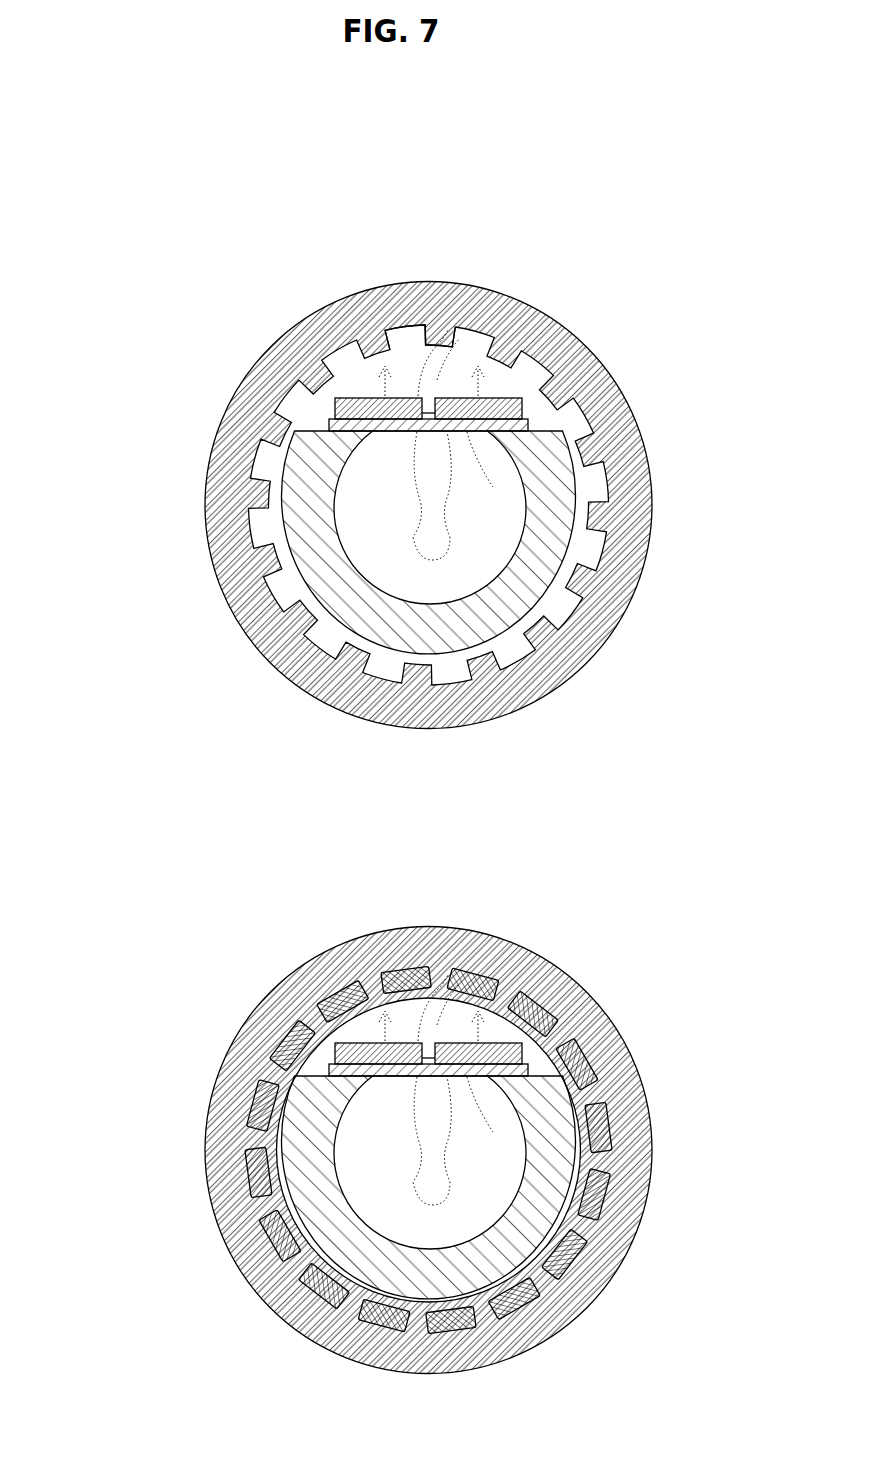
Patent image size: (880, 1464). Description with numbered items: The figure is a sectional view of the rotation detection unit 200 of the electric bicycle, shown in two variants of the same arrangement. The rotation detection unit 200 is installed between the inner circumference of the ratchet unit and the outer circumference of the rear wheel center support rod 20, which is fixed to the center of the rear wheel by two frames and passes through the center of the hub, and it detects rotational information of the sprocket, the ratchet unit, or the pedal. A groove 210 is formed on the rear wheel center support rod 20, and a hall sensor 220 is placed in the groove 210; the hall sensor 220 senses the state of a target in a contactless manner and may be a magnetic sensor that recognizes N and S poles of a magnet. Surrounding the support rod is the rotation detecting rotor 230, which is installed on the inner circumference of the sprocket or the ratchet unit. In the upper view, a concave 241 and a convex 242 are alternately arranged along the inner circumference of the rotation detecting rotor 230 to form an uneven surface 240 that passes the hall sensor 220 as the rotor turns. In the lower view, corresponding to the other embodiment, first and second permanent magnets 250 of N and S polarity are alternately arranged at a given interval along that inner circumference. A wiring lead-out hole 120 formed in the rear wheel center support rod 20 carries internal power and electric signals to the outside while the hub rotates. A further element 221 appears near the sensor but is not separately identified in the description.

The rear wheel center support rod 20 is at (322, 591).
The wiring lead-out hole 120 is at (407, 580).
The rotation detection unit 200 is at (150, 288).
The groove 210 is at (520, 383).
The hall sensor 220 is at (496, 398).
The sensor 221 is at (460, 818).
The rotation detecting rotor 230 is at (233, 437).
The uneven surface 240 is at (443, 200).
The concave 241 is at (441, 338).
The convex 242 is at (372, 346).
The magnet unit 250 is at (468, 970).